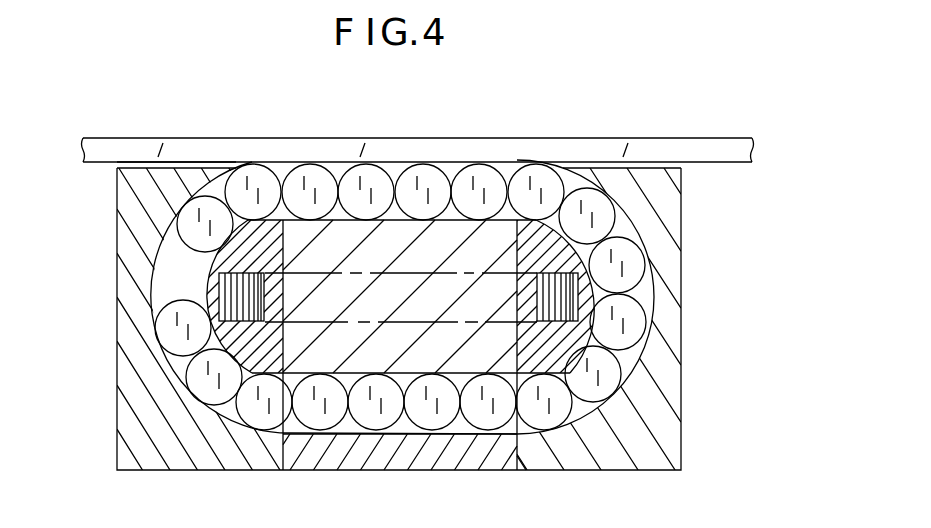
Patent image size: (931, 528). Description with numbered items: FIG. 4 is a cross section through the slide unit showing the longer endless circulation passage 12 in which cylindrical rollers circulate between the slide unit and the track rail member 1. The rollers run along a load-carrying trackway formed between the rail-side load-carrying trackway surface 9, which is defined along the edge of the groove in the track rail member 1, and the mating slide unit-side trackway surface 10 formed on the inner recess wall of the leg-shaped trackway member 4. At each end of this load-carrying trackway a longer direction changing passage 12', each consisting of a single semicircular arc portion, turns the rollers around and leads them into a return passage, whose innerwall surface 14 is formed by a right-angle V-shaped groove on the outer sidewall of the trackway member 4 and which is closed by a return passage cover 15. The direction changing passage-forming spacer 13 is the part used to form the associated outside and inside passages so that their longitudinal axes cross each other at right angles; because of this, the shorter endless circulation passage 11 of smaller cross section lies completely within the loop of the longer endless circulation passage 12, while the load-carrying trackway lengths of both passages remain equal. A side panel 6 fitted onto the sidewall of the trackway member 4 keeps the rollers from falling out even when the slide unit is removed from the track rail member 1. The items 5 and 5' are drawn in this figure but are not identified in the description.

The track rail member 1 is at (725, 150).
The trackway member 4 is at (363, 358).
The ball return groove 5 is at (618, 296).
The outer groove wall 5' is at (622, 297).
The side panel 6 is at (663, 398).
The load-carrying trackway surface 9 is at (184, 160).
The trackway surface 10 is at (463, 200).
The shorter endless circulation passage 11 is at (236, 272).
The longer endless circulation passage 12 is at (376, 155).
The longer direction changing passage 12' is at (360, 333).
The direction changing passage-forming spacer 13 is at (289, 222).
The innerwall surface of roller return passage 14 is at (462, 432).
The return passage cover 15 is at (498, 462).